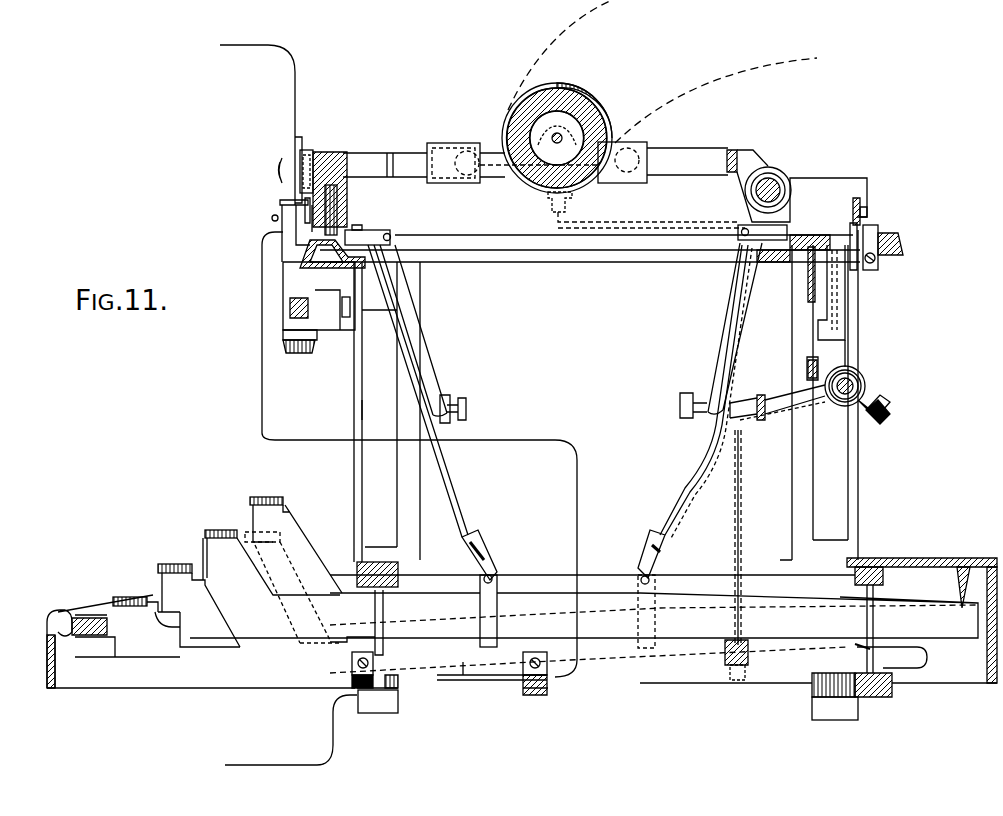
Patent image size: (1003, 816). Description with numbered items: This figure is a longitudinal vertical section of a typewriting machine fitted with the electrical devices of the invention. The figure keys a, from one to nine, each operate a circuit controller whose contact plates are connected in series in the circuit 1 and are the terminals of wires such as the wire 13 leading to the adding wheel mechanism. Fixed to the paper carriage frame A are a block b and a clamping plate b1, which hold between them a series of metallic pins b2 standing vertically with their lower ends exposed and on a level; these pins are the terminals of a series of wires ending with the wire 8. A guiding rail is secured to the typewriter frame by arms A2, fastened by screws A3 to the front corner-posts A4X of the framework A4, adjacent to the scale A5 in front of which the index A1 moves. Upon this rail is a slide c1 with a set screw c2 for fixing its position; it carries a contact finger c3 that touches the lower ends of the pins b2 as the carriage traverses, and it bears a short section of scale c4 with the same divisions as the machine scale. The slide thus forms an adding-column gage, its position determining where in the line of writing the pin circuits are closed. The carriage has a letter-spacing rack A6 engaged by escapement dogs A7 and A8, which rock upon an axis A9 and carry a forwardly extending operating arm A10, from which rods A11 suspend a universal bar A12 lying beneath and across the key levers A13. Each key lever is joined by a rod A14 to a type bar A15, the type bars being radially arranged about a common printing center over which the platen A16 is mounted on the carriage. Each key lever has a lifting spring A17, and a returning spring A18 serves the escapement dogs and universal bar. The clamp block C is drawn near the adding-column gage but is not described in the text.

The circuit 1 is at (577, 522).
The wire 8 is at (270, 50).
The wire 13 is at (333, 737).
The figure keys a is at (268, 497).
The block b is at (306, 150).
The clamping plate b1 is at (280, 162).
The metallic pins b2 is at (297, 142).
The slide c1 is at (283, 335).
The set screw c2 is at (298, 354).
The contact finger c3 is at (280, 203).
The short section of scale c4 is at (300, 265).
The clamp block C is at (305, 318).
The paper carriage frame A is at (366, 160).
The index A1 is at (310, 228).
The arms A2 is at (327, 310).
The screws A3 is at (346, 320).
The framework A4 is at (556, 262).
The front corner-posts A4X is at (354, 413).
The scale A5 is at (310, 250).
The letter-spacing rack A6 is at (862, 212).
The escapement dog A7 is at (885, 235).
The escapement dog A8 is at (848, 228).
The axis A9 is at (857, 378).
The operating arm A10 is at (775, 397).
The rods A11 is at (741, 512).
The universal bar A12 is at (725, 652).
The key levers A13 is at (584, 624).
The rod A14 is at (452, 508).
The type bar A15 is at (420, 373).
The platen A16 is at (545, 188).
The lifting spring A17 is at (930, 660).
The returning spring A18 is at (878, 403).